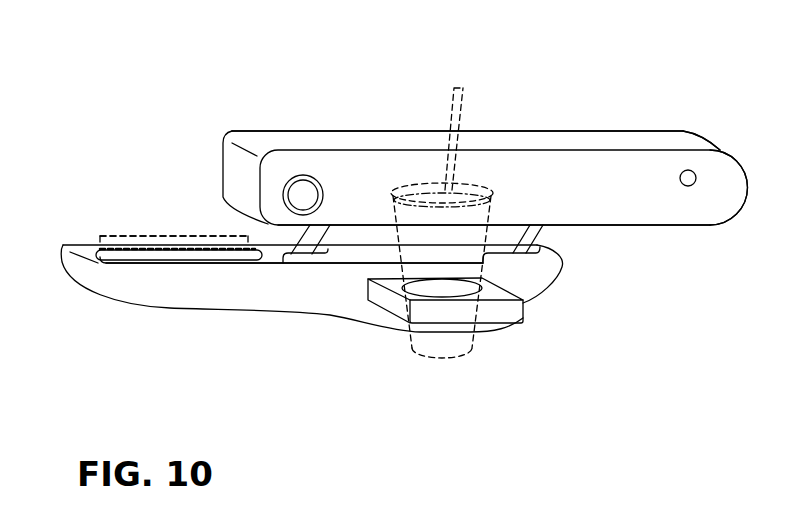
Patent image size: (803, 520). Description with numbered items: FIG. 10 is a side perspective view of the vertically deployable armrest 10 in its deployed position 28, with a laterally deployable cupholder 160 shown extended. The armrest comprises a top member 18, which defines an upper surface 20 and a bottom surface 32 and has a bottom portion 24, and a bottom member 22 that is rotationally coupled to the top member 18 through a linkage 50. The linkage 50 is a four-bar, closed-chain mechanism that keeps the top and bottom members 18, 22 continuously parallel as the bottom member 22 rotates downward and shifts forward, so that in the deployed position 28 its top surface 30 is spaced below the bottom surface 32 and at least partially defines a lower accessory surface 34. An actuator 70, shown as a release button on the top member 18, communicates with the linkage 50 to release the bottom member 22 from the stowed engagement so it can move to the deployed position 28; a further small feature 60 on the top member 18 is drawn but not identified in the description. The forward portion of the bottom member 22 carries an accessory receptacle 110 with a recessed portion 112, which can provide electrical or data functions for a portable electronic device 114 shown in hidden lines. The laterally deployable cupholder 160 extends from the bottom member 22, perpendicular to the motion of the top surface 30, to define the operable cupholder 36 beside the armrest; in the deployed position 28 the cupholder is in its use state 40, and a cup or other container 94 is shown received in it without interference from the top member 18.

The vertically deployable armrest 10 is at (398, 89).
The top member 18 is at (601, 163).
The upper surface 20 is at (342, 141).
The bottom member 22 is at (170, 292).
The bottom portion 24 is at (656, 230).
The deployed position 28 is at (689, 121).
The top surface 30 is at (262, 242).
The bottom surface 32 is at (592, 226).
The lower accessory surface 34 is at (461, 256).
The operable cupholder 36 is at (360, 303).
The use state 40 is at (394, 349).
The linkage 50 is at (305, 262).
The aperture 60 is at (693, 171).
The actuator 70 is at (298, 191).
The cup or other container 94 is at (470, 188).
The accessory receptacle 110 is at (136, 239).
The recessed portion 112 is at (102, 253).
The portable electronic device 114 is at (180, 233).
The laterally deployable cupholder 160 is at (447, 339).